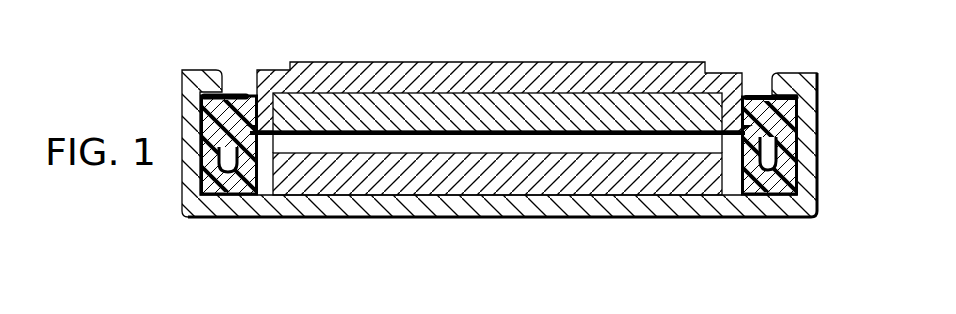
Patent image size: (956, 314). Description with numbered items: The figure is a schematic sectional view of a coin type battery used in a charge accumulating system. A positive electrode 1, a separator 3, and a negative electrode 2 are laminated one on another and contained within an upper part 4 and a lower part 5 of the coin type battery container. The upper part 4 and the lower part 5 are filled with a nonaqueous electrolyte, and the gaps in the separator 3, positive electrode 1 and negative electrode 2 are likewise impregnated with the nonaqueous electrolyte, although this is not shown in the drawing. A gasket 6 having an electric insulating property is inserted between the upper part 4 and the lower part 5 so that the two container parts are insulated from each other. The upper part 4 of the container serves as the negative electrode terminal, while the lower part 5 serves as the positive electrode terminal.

The positive electrode 1 is at (352, 178).
The negative electrode 2 is at (322, 95).
The separator 3 is at (455, 142).
The upper part of the coin type battery container 4 is at (806, 152).
The lower part of the coin type battery container 5 is at (458, 80).
The gasket 6 is at (246, 95).